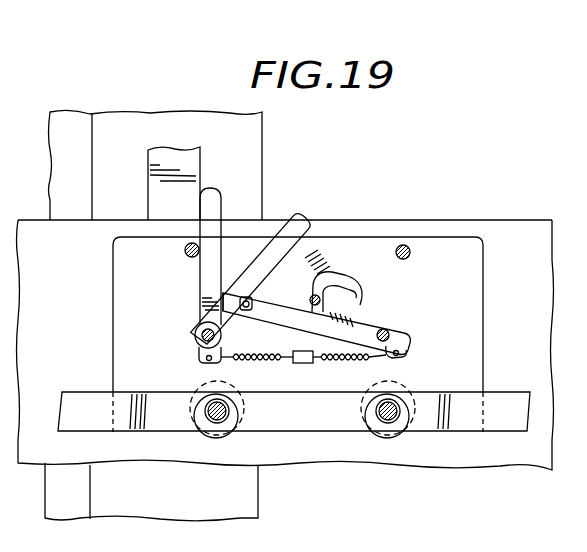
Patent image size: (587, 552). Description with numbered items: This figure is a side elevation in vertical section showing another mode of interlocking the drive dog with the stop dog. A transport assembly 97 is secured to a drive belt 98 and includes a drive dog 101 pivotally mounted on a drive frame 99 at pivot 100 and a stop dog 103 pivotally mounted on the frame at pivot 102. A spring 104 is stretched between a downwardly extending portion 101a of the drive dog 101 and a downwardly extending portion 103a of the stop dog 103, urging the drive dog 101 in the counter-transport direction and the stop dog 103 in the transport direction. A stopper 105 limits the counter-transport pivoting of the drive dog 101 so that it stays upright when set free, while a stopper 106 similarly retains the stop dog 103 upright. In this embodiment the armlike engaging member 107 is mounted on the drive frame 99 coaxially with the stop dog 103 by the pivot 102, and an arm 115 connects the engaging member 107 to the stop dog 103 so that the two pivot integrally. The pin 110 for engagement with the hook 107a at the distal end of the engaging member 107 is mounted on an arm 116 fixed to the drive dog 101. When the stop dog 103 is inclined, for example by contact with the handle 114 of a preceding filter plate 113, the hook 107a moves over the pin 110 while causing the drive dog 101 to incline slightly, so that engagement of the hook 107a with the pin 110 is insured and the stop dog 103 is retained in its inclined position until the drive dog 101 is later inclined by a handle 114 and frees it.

The transport assembly 97 is at (390, 236).
The drive belt 98 is at (508, 433).
The drive frame 99 is at (483, 291).
The pivot 100 is at (203, 334).
The drive dog 101 is at (226, 181).
The downwardly extending portion of the drive dog 101a is at (203, 357).
The pivot 102 is at (389, 332).
The stop dog 103 is at (302, 230).
The downwardly extending portion of the stop dog 103a is at (407, 353).
The spring 104 is at (336, 362).
The stopper for the drive dog 105 is at (186, 252).
The stopper for the stop dog 106 is at (410, 255).
The engaging member 107 is at (355, 306).
The hook 107a is at (240, 299).
The pin 110 is at (246, 310).
The filter plate 113 is at (262, 140).
The handle 114 is at (148, 183).
The arm 115 is at (336, 276).
The arm 116 is at (233, 295).